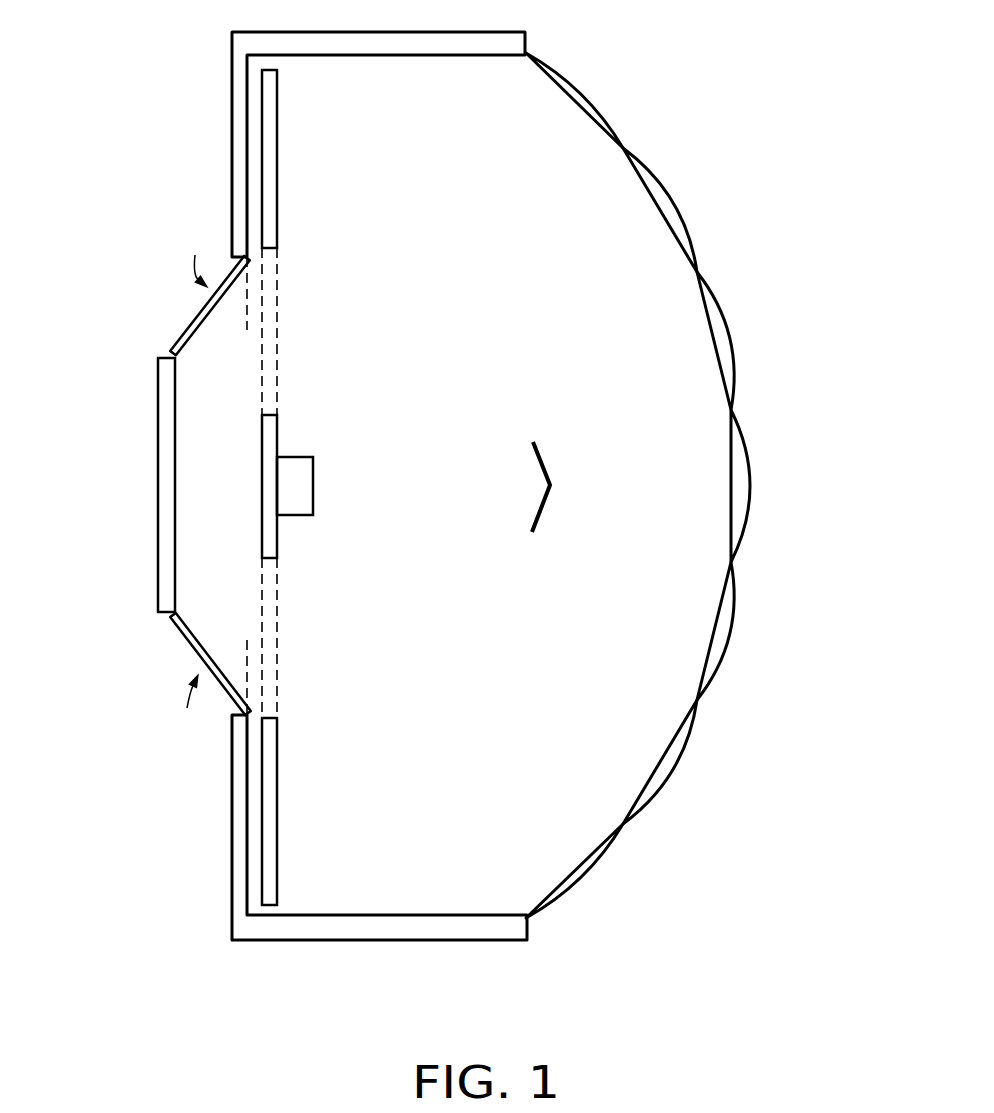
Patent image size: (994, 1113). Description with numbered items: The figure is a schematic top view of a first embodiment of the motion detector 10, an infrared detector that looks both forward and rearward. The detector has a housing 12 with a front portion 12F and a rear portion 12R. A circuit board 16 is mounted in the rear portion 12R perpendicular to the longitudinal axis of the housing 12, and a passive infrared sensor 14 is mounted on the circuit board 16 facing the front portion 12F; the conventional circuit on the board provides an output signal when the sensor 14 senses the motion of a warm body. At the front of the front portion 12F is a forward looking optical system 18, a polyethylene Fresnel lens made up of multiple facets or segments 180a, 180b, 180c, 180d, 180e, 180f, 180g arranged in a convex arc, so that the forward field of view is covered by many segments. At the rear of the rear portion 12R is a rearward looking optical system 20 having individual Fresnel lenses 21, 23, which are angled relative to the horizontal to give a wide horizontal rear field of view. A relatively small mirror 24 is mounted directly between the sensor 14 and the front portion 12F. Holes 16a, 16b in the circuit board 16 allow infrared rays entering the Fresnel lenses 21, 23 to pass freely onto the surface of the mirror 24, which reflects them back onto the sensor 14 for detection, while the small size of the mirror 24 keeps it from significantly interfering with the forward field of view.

The motion detector 10 is at (632, 955).
The housing 12 is at (412, 942).
The front portion 12F is at (571, 265).
The rear portion 12R is at (372, 305).
The passive infrared sensor 14 is at (300, 463).
The circuit board 16 is at (278, 188).
The hole 16a is at (275, 365).
The hole 16b is at (275, 612).
The forward looking optical system 18 is at (683, 478).
The facet or segment 180a is at (587, 110).
The facet or segment 180b is at (658, 203).
The facet or segment 180c is at (720, 342).
The facet or segment 180d is at (738, 510).
The facet or segment 180e is at (735, 600).
The facet or segment 180f is at (676, 757).
The facet or segment 180g is at (585, 877).
The rearward looking optical system 20 is at (156, 275).
The Fresnel lens 21 is at (190, 308).
The Fresnel lens 23 is at (190, 662).
The mirror 24 is at (545, 462).